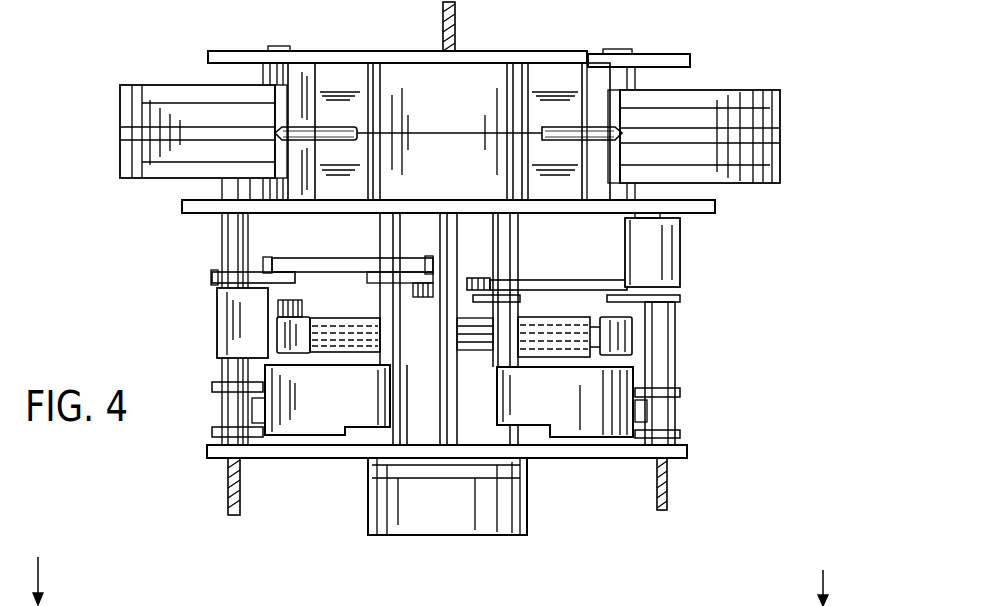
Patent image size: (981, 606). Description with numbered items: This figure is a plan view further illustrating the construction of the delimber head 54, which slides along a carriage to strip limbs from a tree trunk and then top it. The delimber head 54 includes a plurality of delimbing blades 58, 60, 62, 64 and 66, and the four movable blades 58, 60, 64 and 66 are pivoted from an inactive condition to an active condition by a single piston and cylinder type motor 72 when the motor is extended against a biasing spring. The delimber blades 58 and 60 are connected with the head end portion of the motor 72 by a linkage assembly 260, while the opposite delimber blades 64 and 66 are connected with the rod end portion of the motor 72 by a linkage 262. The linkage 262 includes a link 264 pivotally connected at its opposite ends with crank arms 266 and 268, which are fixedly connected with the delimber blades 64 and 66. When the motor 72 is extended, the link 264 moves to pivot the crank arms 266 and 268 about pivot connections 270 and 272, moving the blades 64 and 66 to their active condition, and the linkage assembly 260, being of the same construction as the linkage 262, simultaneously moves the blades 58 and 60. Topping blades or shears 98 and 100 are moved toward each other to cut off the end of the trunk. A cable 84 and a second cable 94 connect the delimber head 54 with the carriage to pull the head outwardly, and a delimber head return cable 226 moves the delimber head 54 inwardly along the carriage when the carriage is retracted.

The delimber head 54 is at (802, 140).
The delimbing blade 58 is at (240, 337).
The delimbing blade 60 is at (315, 422).
The delimbing blade 62 is at (432, 527).
The delimbing blade 64 is at (578, 415).
The delimbing blade 66 is at (670, 250).
The piston and cylinder type motor 72 is at (347, 333).
The cable 84 is at (242, 497).
The second cable 94 is at (667, 493).
The topping blade 98 is at (327, 128).
The topping blade 100 is at (577, 127).
The delimber head return cable 226 is at (460, 12).
The linkage assembly 260 is at (353, 237).
The linkage 262 is at (610, 238).
The link 264 is at (526, 262).
The crank arm 266 is at (480, 296).
The crank arm 268 is at (653, 298).
The pivot connection 270 is at (517, 425).
The pivot connection 272 is at (663, 322).